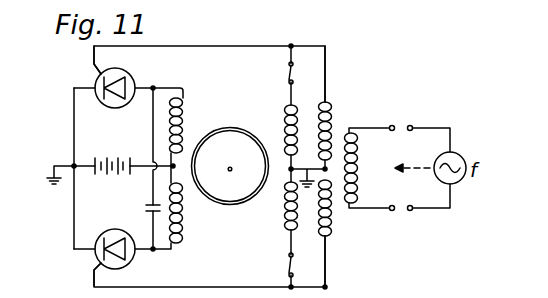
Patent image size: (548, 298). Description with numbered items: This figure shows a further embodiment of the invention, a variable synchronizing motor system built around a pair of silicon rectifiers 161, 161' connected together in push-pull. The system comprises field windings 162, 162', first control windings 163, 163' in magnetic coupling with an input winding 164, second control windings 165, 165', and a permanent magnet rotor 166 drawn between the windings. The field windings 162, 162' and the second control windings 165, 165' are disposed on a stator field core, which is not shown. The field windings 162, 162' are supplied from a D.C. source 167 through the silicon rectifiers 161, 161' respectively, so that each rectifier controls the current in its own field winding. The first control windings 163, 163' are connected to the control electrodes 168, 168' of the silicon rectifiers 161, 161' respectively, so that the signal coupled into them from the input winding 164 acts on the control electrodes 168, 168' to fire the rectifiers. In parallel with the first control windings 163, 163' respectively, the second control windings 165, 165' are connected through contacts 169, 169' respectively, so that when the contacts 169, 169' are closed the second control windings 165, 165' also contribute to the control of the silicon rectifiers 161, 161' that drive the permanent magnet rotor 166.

The silicon rectifier 161 is at (137, 79).
The silicon rectifier 161' is at (137, 258).
The field winding 162 is at (201, 116).
The field winding 162' is at (202, 217).
The first control winding 163 is at (350, 118).
The first control winding 163' is at (355, 219).
The input winding 164 is at (358, 184).
The second control winding 165 is at (267, 124).
The second control winding 165' is at (273, 219).
The permanent magnet rotor 166 is at (248, 196).
The D.C. source 167 is at (116, 171).
The control electrode 168 is at (69, 60).
The control electrode 168' is at (68, 274).
The contact 169 is at (268, 67).
The contact 169' is at (260, 268).